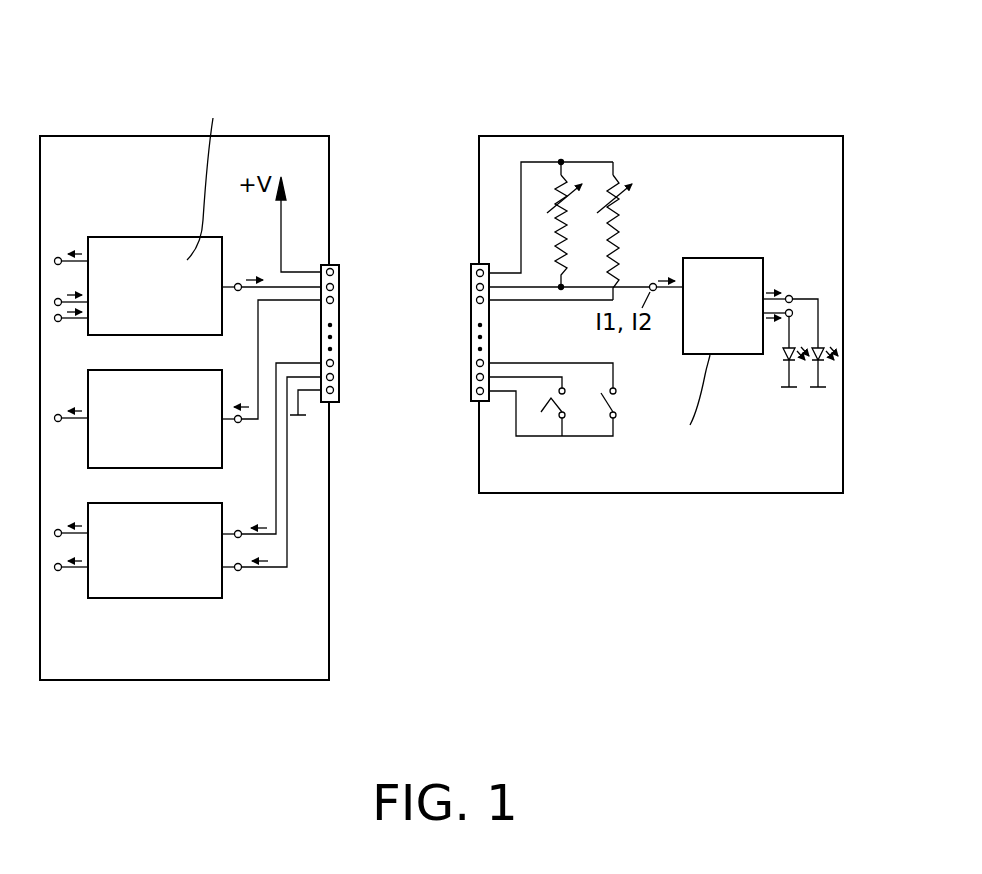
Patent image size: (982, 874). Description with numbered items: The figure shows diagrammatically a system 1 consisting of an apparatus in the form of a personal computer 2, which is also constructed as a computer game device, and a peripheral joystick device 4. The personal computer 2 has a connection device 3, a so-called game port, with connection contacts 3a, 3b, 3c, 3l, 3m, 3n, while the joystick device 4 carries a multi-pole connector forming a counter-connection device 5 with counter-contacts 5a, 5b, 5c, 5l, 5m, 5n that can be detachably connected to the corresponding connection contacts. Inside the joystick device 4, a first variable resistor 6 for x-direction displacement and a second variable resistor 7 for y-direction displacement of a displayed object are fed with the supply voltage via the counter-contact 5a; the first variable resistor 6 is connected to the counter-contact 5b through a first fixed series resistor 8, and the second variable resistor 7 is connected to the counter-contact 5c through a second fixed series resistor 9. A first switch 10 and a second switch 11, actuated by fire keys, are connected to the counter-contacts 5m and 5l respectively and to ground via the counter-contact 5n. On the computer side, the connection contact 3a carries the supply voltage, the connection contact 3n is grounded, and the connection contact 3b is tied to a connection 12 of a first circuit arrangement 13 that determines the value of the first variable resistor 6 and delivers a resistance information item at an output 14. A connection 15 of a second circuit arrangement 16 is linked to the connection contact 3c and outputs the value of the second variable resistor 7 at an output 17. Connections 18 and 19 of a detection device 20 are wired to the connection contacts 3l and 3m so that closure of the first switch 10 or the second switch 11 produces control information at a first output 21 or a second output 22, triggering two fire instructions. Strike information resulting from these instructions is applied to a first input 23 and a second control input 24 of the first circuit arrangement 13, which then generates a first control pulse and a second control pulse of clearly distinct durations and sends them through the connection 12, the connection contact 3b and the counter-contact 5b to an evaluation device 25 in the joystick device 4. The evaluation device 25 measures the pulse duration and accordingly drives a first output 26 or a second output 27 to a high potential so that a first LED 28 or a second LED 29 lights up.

The system 1 is at (649, 675).
The personal computer 2 is at (207, 683).
The connection device 3 is at (359, 347).
The connection contact 3a is at (340, 268).
The connection contact 3b is at (340, 287).
The connection contact 3c is at (340, 301).
The connection contact 3l is at (340, 364).
The connection contact 3m is at (340, 377).
The connection contact 3n is at (340, 392).
The joystick device 4 is at (617, 497).
The counter-connection device 5 is at (455, 346).
The counter-contact 5a is at (470, 272).
The counter-contact 5b is at (470, 287).
The counter-contact 5c is at (470, 300).
The counter-contact 5l is at (470, 363).
The counter-contact 5m is at (470, 377).
The counter-contact 5n is at (470, 392).
The first variable resistor 6 is at (556, 185).
The second variable resistor 7 is at (626, 190).
The first fixed series resistor 8 is at (557, 249).
The second fixed series resistor 9 is at (616, 248).
The first switch 10 is at (527, 407).
The second switch 11 is at (618, 405).
The connection 12 is at (238, 283).
The first circuit arrangement 13 is at (137, 237).
The output 14 is at (58, 257).
The connection 15 is at (239, 423).
The second circuit arrangement 16 is at (130, 370).
The output 17 is at (58, 414).
The connection 18 is at (240, 530).
The connection 19 is at (242, 570).
The detection device 20 is at (130, 600).
The first output 21 is at (58, 571).
The second output 22 is at (58, 529).
The first input 23 is at (58, 322).
The second control input 24 is at (58, 298).
The evaluation device 25 is at (737, 254).
The first output 26 is at (789, 294).
The second output 27 is at (795, 310).
The first LED 28 is at (817, 367).
The second LED 29 is at (785, 366).